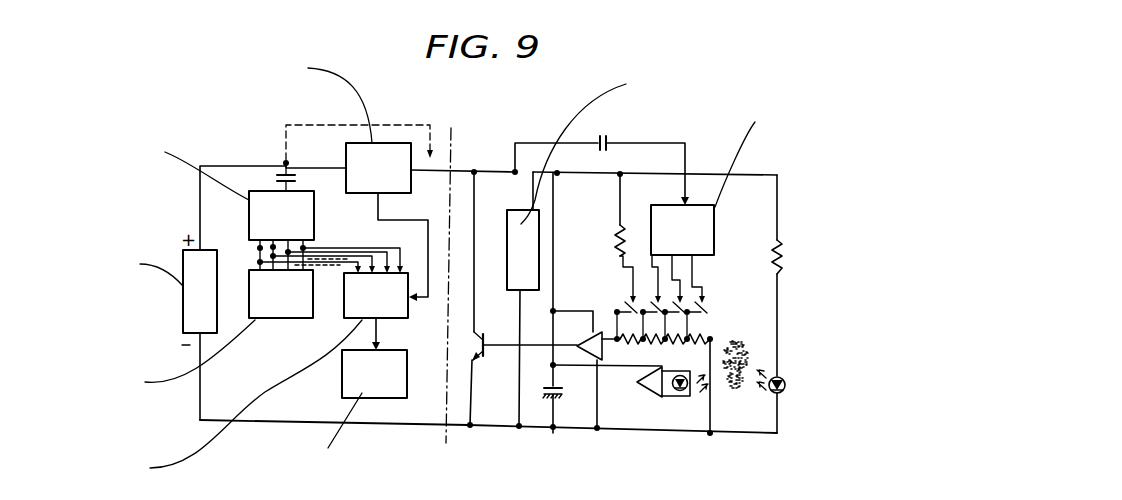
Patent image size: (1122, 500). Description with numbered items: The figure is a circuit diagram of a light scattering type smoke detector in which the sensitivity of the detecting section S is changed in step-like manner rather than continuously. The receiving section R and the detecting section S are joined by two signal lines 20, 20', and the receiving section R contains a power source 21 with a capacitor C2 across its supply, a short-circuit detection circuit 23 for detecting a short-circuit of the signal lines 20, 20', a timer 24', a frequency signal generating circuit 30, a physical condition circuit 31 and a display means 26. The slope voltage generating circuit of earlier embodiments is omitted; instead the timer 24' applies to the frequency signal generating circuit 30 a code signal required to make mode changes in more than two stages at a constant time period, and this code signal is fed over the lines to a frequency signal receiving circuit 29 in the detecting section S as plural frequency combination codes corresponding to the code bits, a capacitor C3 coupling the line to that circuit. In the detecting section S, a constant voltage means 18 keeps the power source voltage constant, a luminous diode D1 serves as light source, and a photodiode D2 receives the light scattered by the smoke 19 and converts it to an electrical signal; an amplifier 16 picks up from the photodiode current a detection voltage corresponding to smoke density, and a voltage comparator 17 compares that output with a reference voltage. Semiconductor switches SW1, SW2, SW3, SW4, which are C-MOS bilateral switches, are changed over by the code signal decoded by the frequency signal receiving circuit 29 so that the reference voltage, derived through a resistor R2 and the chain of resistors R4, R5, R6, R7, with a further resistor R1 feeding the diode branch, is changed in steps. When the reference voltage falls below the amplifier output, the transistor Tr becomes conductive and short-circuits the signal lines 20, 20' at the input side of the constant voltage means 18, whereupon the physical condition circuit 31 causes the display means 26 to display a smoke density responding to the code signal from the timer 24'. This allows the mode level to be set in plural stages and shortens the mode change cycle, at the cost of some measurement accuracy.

The short-circuit detection circuit 23 is at (363, 143).
The frequency signal generating circuit 30 is at (284, 191).
The capacitor C2 is at (289, 174).
The power source 21 is at (210, 250).
The timer 24' is at (204, 326).
The physical condition circuit 31 is at (344, 312).
The display means 26 is at (342, 372).
The receiving section R is at (416, 120).
The detecting section S is at (496, 120).
The signal line 20 is at (481, 156).
The signal line 20' is at (478, 454).
The constant voltage means 18 is at (508, 226).
The capacitor C3 is at (603, 136).
The frequency signal receiving circuit 29 is at (698, 205).
The resistor R2 is at (622, 230).
The resistor R1 is at (779, 252).
The semiconductor switch SW1 is at (628, 306).
The semiconductor switch SW2 is at (652, 303).
The semiconductor switch SW3 is at (690, 303).
The semiconductor switch SW4 is at (703, 312).
The transistor Tr is at (492, 327).
The voltage comparator 17 is at (565, 345).
The resistor R4 is at (640, 342).
The resistor R5 is at (652, 345).
The resistor R6 is at (705, 334).
The resistor R7 is at (712, 342).
The amplifier 16 is at (662, 400).
The photodiode D2 is at (687, 392).
The smoke 19 is at (731, 378).
The luminous diode D1 is at (786, 388).